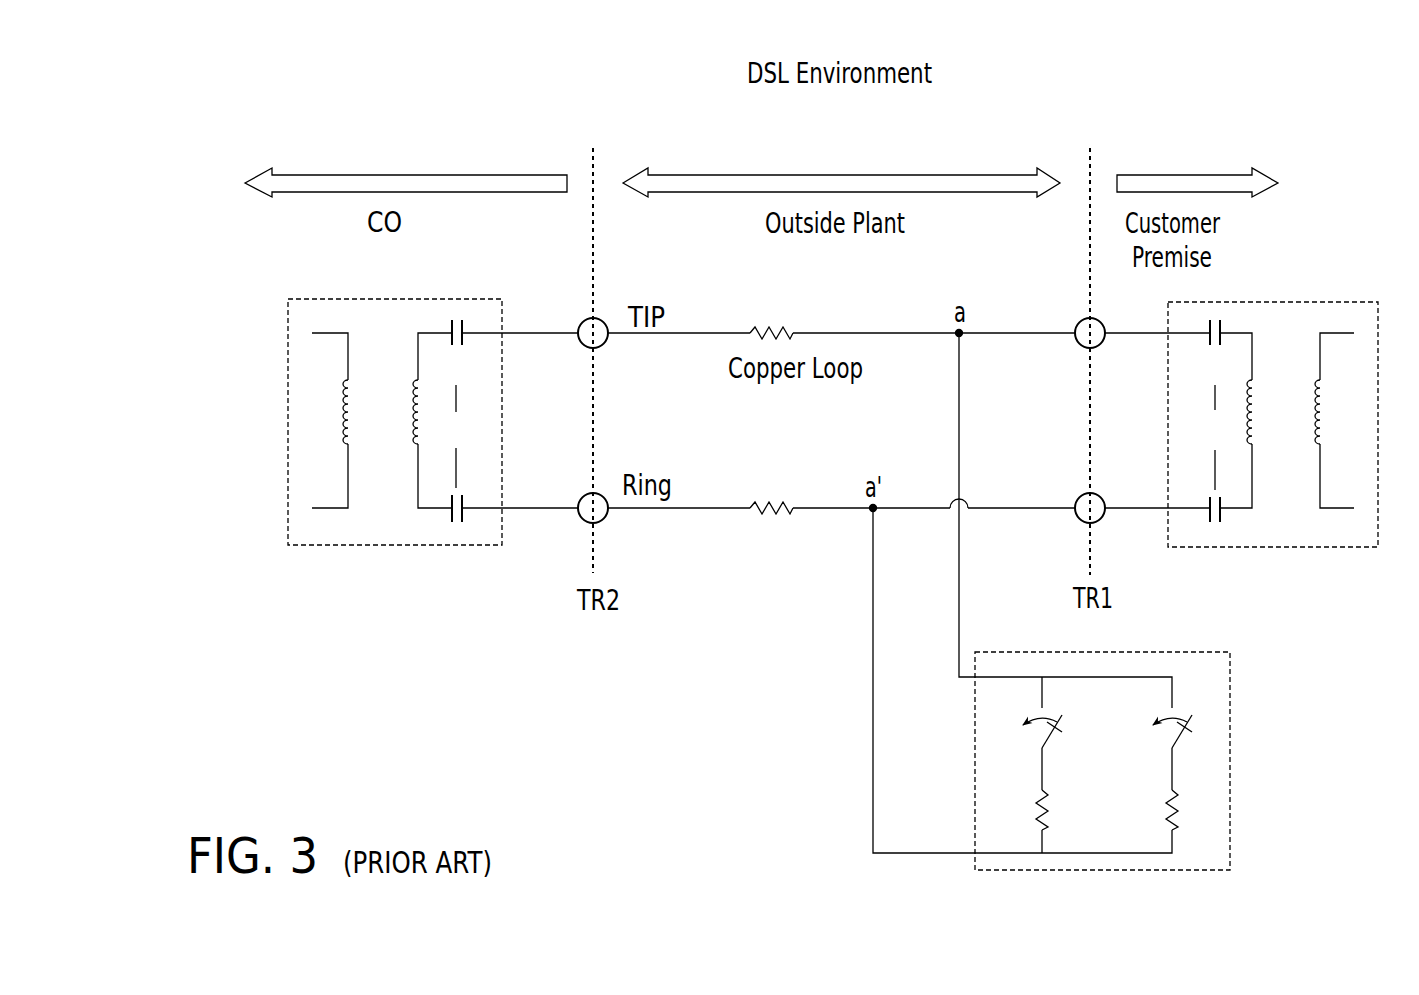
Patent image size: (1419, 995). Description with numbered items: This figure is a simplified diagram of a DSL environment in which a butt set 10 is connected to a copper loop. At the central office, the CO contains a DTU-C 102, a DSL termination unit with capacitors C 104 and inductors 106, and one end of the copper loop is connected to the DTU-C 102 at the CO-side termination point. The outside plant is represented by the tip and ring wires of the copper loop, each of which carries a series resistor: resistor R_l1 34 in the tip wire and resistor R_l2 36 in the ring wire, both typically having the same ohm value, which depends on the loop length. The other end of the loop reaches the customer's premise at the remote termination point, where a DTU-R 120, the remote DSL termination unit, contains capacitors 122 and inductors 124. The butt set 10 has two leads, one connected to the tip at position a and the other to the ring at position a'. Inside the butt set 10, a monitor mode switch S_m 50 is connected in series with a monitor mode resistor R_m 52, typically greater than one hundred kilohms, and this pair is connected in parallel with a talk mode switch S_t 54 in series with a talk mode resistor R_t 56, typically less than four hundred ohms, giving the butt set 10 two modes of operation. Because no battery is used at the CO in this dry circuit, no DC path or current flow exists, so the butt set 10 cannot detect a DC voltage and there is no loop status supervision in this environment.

The butt set 10 is at (1150, 761).
The resistor R_l1 34 is at (793, 333).
The resistor R_l2 36 is at (757, 504).
The monitor mode switch S_m 50 is at (1048, 740).
The monitor mode resistor R_m 52 is at (1033, 803).
The talk mode switch S_t 54 is at (1178, 740).
The talk mode resistor R_t 56 is at (1163, 803).
The DTU-C 102 is at (394, 460).
The capacitors C 104 is at (460, 421).
The inductors 106 is at (398, 431).
The DTU-R 120 is at (1273, 464).
The capacitors 122 is at (1214, 421).
The inductors 124 is at (1302, 429).